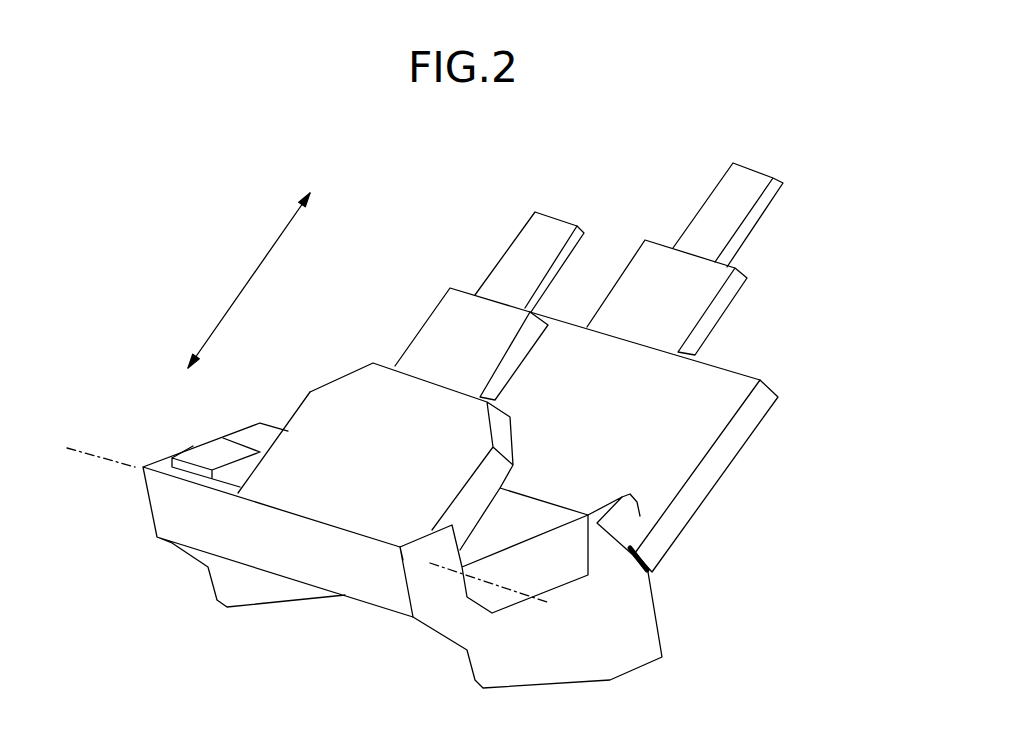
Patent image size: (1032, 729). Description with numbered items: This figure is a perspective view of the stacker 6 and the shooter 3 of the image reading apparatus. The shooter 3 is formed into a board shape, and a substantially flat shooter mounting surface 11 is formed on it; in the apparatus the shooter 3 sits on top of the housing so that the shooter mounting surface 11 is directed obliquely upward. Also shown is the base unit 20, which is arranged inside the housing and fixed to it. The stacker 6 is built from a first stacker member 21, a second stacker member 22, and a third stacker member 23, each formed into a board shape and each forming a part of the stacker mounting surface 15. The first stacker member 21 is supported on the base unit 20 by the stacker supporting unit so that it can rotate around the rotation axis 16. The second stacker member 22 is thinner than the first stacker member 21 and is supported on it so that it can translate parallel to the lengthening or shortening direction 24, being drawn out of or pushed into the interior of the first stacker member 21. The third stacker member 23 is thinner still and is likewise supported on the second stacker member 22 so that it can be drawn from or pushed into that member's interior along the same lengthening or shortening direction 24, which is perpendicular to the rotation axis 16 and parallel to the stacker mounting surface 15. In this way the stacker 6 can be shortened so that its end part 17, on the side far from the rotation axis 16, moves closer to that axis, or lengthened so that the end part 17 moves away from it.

The shooter 3 is at (738, 453).
The stacker 6 is at (413, 415).
The shooter mounting surface 11 is at (661, 440).
The stacker mounting surface 15 is at (322, 430).
The rotation axis 16 is at (120, 462).
The end part 17 is at (558, 214).
The base unit 20 is at (655, 622).
The first stacker member 21 is at (310, 392).
The second stacker member 22 is at (418, 333).
The third stacker member 23 is at (508, 245).
The lengthening or shortening direction 24 is at (245, 285).